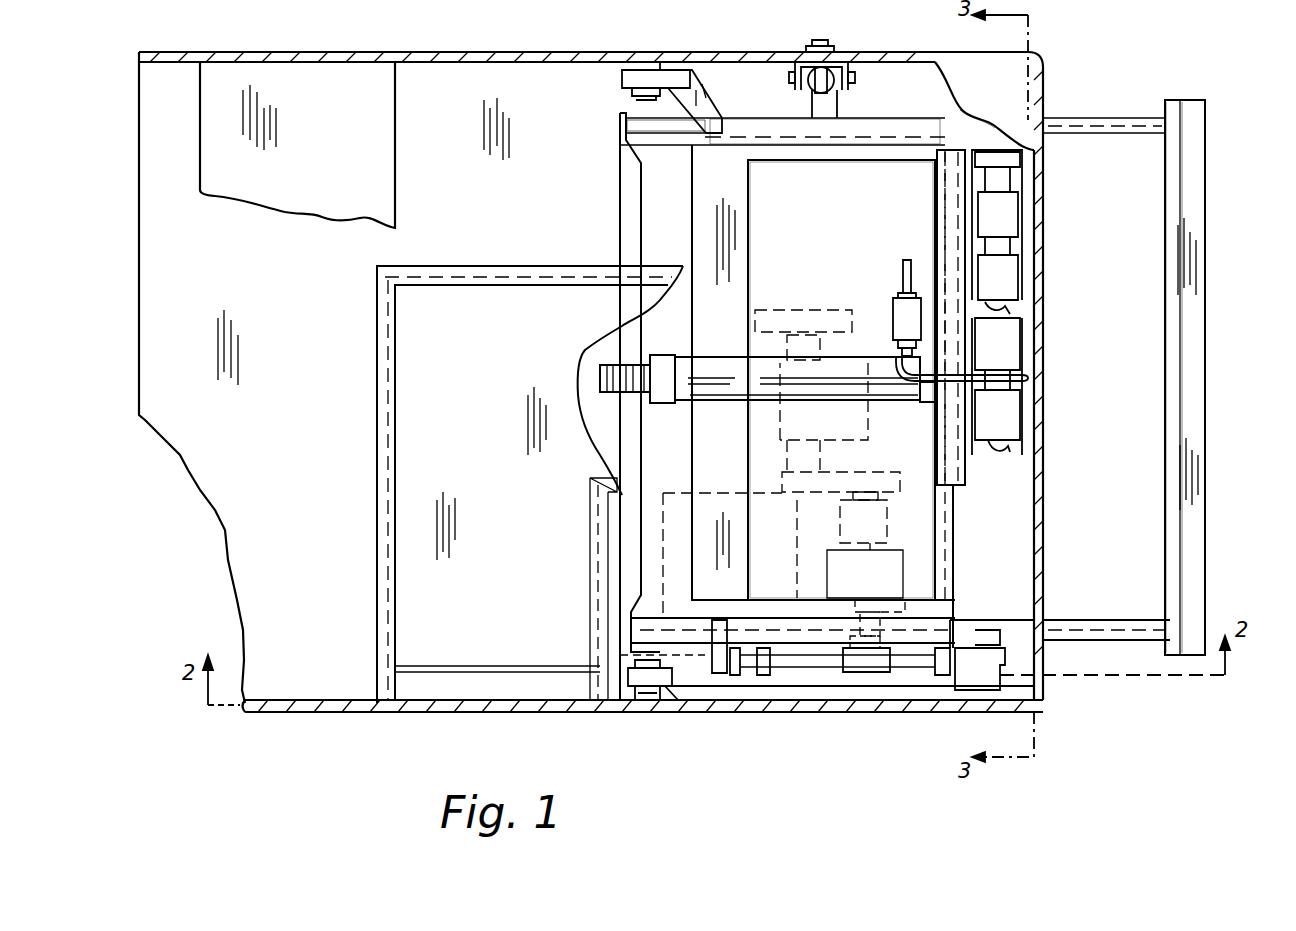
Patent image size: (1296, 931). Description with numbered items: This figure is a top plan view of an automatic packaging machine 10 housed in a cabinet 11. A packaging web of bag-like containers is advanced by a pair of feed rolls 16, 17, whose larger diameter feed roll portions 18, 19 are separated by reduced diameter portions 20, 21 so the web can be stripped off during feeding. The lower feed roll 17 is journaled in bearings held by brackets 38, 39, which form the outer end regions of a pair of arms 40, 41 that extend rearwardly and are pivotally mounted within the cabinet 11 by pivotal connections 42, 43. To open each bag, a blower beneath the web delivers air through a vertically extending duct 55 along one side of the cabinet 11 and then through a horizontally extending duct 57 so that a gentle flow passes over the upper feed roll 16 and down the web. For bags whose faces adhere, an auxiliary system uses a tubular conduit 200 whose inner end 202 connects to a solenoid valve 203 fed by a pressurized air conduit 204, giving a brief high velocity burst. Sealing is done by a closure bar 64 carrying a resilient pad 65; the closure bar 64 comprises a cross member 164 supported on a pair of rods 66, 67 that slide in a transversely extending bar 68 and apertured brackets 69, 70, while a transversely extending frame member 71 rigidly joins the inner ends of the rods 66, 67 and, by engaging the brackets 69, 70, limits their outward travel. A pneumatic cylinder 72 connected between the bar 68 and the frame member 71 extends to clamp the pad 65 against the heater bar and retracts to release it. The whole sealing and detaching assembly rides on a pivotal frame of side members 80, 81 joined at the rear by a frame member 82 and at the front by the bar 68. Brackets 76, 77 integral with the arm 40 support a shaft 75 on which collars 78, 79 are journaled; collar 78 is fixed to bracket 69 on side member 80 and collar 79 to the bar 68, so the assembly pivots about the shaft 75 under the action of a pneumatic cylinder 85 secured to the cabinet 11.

The packaging machine 10 is at (844, 22).
The cabinet 11 is at (897, 58).
The upper feed roll 16 is at (1020, 222).
The lower feed roll 17 is at (1020, 328).
The larger diameter feed roll portions 18 is at (1006, 223).
The larger diameter feed roll portions 19 is at (1004, 348).
The reduced diameter portions 20 is at (1000, 184).
The reduced diameter portions 21 is at (1022, 312).
The bracket 38 is at (998, 638).
The bracket 39 is at (989, 110).
The arm 40 is at (850, 690).
The arm 41 is at (880, 132).
The pivotal connection 42 is at (655, 690).
The pivotal connection 43 is at (636, 60).
The vertically extending duct 55 is at (492, 695).
The horizontally extending duct 57 is at (591, 377).
The closure bar 64 is at (1165, 400).
The resilient pad 65 is at (1182, 352).
The support rod 66 is at (648, 640).
The support rod 67 is at (640, 130).
The transversely extending bar 68 is at (965, 556).
The apertured bracket 69 is at (715, 636).
The apertured bracket 70 is at (720, 116).
The transversely extending frame member 71 is at (642, 192).
The pneumatic cylinder 72 is at (733, 381).
The shaft 75 is at (905, 660).
The bracket 76 is at (770, 665).
The bracket 77 is at (990, 678).
The collar 78 is at (730, 675).
The collar 79 is at (940, 674).
The side member 80 is at (760, 612).
The side member 81 is at (823, 372).
The transversely extending frame member 82 is at (736, 458).
The pneumatic cylinder 85 is at (850, 96).
The cross member 164 is at (1206, 304).
The tubular conduit 200 is at (950, 400).
The inner end of the conduit 202 is at (898, 352).
The solenoid valve 203 is at (895, 316).
The pressurized air conduit 204 is at (900, 276).